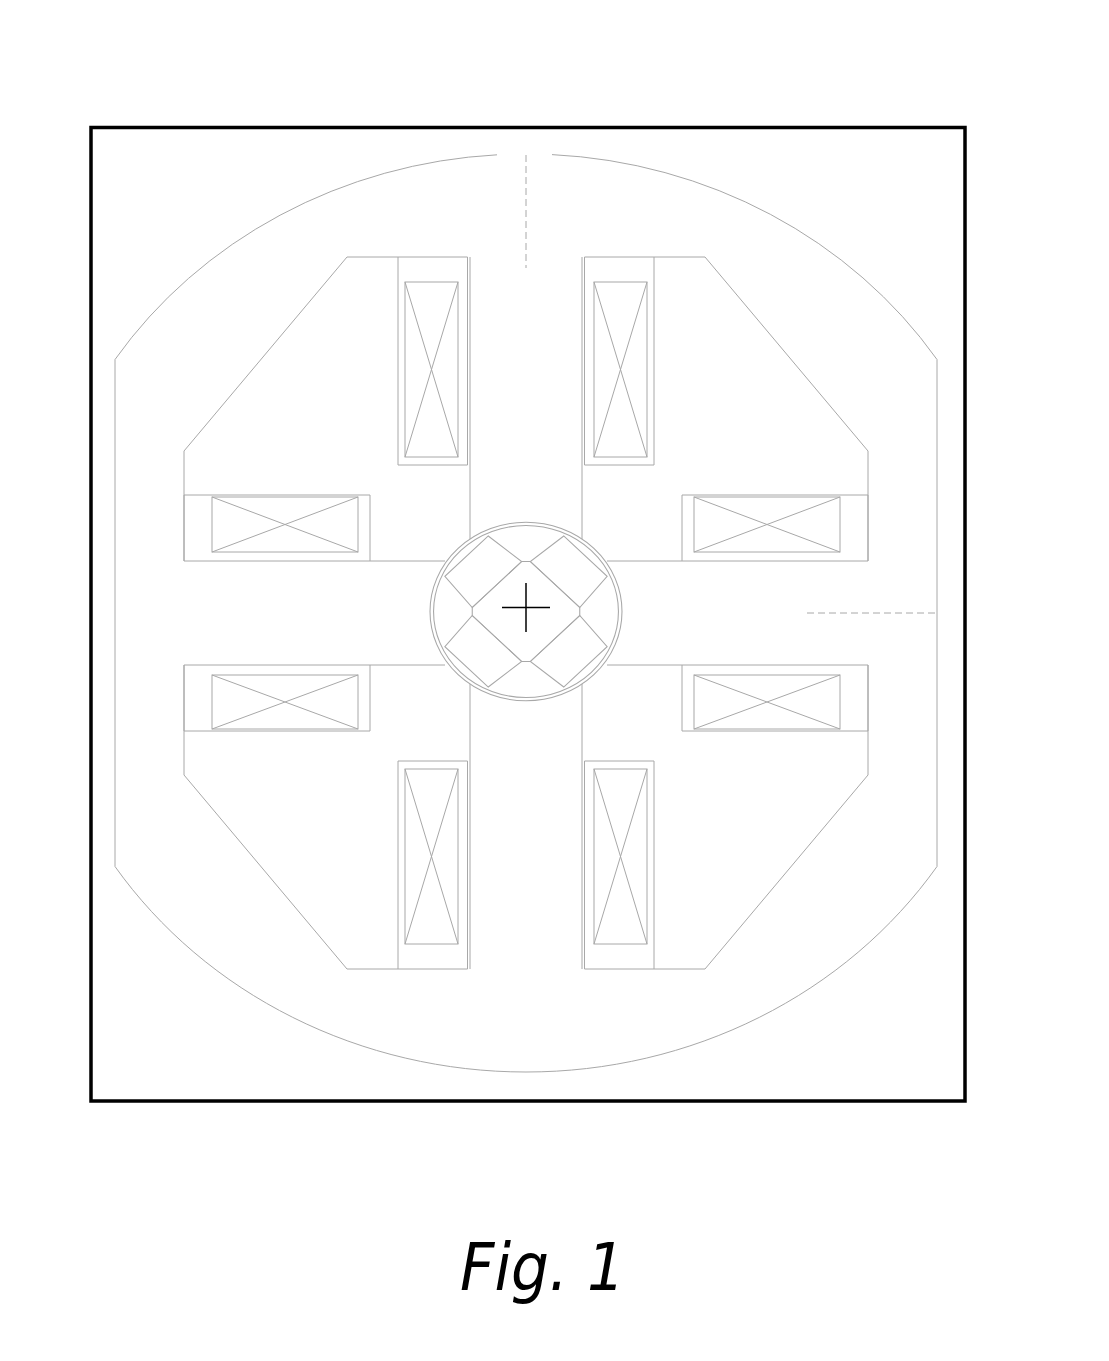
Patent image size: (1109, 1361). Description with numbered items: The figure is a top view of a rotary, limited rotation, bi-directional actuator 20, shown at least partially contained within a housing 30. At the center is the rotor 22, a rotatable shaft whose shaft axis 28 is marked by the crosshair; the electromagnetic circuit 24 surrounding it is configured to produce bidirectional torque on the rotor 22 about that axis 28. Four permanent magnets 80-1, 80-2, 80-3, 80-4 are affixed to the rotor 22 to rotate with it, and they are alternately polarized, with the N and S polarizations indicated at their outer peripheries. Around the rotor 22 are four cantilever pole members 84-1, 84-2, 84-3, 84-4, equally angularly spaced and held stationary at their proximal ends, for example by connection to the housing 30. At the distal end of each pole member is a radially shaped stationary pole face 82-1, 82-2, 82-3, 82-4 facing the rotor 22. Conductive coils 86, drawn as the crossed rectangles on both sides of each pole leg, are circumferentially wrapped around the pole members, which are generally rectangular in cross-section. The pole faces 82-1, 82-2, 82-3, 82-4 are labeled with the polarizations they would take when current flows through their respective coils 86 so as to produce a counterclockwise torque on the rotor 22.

The actuator 20 is at (648, 99).
The housing 30 is at (268, 127).
The electromagnetic circuit 24 is at (668, 306).
The rotor 22 is at (520, 633).
The shaft axis 28 is at (522, 609).
The permanent magnet 80-1 is at (494, 572).
The permanent magnet 80-2 is at (578, 573).
The permanent magnet 80-3 is at (577, 673).
The permanent magnet 80-4 is at (465, 642).
The stationary pole face 82-1 is at (508, 522).
The stationary pole face 82-2 is at (620, 607).
The stationary pole face 82-3 is at (542, 702).
The stationary pole face 82-4 is at (430, 650).
The pole member 84-1 is at (526, 398).
The pole member 84-2 is at (737, 613).
The pole member 84-3 is at (526, 826).
The pole member 84-4 is at (314, 613).
The conductive coil 86 is at (438, 388).